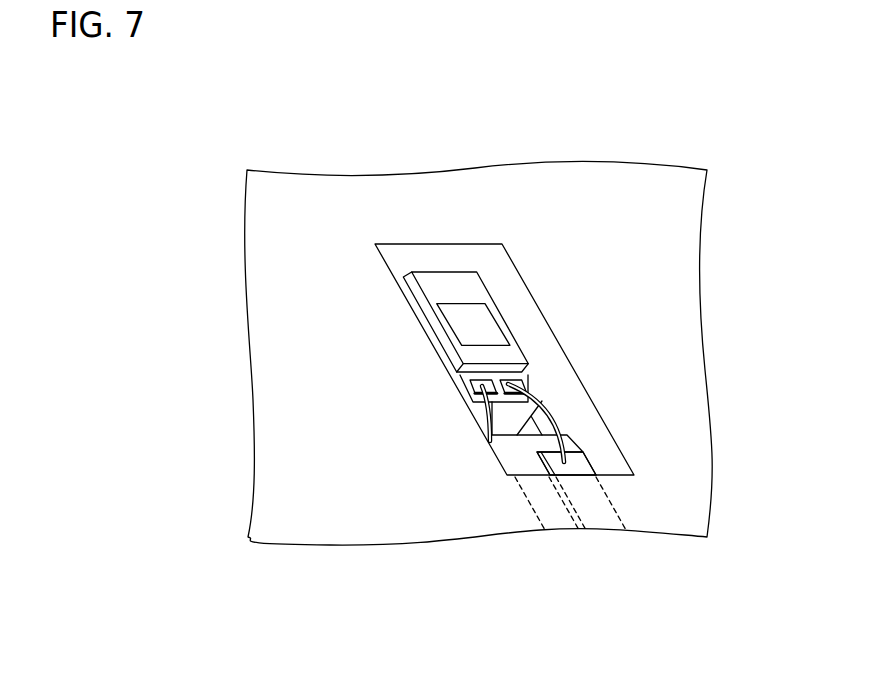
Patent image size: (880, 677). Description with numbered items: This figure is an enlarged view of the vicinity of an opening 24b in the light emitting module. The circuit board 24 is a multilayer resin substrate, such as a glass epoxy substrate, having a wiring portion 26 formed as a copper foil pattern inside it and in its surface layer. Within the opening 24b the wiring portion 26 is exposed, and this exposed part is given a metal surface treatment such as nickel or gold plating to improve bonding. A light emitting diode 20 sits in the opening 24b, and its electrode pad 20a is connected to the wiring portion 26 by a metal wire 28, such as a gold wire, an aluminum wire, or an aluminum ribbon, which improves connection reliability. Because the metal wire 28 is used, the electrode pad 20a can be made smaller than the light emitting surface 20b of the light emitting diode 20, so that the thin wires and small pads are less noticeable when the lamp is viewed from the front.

The light emitting diode 20 is at (452, 285).
The electrode pad 20a is at (467, 384).
The light emitting surface 20b is at (473, 327).
The circuit board 24 is at (670, 260).
The opening 24b is at (512, 312).
The wiring portion 26 is at (578, 465).
The metal wire 28 is at (547, 413).